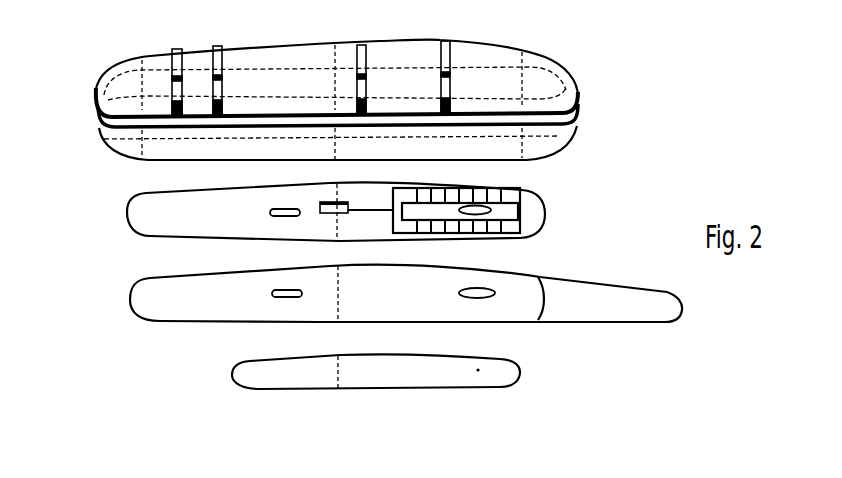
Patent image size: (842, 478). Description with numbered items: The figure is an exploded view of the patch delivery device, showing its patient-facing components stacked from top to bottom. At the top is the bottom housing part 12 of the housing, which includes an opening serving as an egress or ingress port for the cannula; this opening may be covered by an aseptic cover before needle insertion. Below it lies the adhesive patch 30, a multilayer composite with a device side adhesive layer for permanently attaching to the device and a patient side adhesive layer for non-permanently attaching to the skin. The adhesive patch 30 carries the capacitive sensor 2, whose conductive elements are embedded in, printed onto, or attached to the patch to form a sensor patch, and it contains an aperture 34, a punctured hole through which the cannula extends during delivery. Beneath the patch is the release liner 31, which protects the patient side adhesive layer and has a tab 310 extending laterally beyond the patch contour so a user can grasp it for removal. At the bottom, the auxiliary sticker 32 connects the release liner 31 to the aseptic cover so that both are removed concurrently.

The bottom housing part 12 is at (573, 130).
The adhesive patch 30 is at (145, 210).
The aperture 34 is at (518, 188).
The capacitive sensor 2 is at (528, 215).
The release liner 31 is at (150, 293).
The tab 310 is at (660, 315).
The auxiliary sticker 32 is at (243, 373).